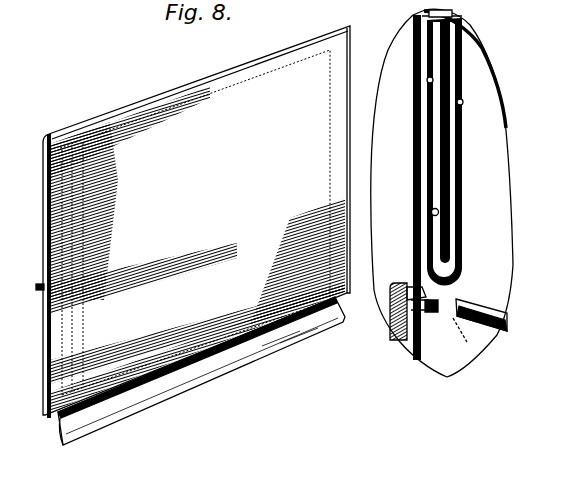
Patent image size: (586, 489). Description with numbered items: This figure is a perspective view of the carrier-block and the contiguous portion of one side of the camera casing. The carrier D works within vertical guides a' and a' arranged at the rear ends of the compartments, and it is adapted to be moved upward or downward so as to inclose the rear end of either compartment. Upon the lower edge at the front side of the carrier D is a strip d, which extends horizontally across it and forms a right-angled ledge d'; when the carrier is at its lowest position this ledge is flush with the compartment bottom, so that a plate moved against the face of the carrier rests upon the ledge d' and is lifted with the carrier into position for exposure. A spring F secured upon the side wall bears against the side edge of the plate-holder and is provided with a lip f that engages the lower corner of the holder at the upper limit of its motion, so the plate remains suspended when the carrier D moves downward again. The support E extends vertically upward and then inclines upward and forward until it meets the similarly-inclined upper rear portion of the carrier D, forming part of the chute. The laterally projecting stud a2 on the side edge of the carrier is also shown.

The carrier D is at (196, 222).
The strip d is at (201, 371).
The right-angled ledge d' is at (270, 347).
The pin on panel edge a2 is at (30, 287).
The vertical guide a' is at (442, 193).
The spring F is at (411, 275).
The support E is at (462, 278).
The lip f is at (432, 313).